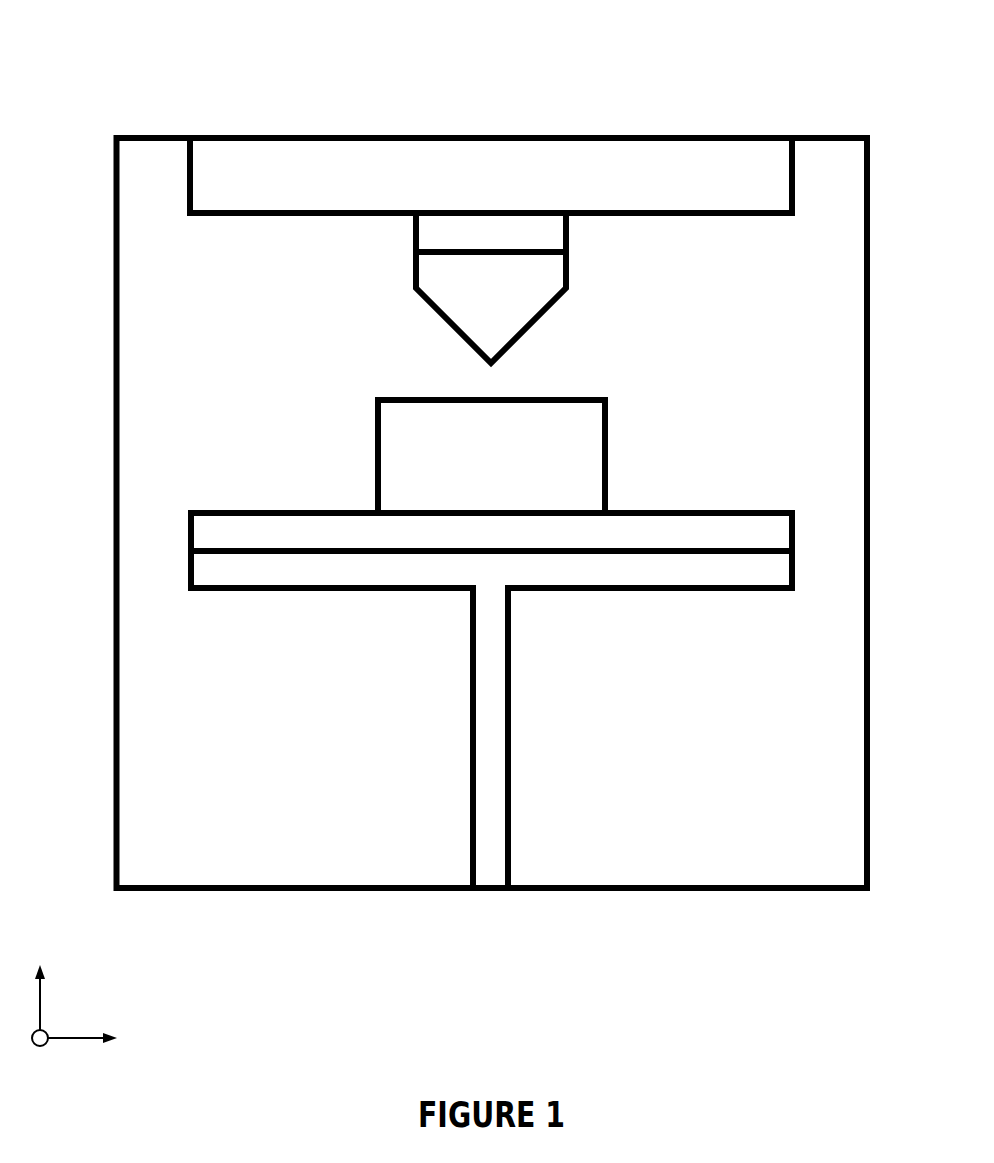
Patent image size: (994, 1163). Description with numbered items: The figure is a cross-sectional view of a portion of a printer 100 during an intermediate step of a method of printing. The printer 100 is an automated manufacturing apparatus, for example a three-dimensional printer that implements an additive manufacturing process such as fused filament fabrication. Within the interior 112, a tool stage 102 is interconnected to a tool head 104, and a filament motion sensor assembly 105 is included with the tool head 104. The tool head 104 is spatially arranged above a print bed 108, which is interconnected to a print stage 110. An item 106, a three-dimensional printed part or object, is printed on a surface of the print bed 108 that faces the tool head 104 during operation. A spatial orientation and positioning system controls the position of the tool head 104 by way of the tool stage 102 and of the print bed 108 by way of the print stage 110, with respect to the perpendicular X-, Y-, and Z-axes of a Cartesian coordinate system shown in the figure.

The printer 100 is at (79, 91).
The tool stage 102 is at (765, 178).
The tool head 104 is at (548, 280).
The filament motion sensor assembly 105 is at (548, 239).
The item 106 is at (583, 460).
The print bed 108 is at (765, 535).
The print stage 110 is at (765, 572).
The interior 112 is at (847, 878).